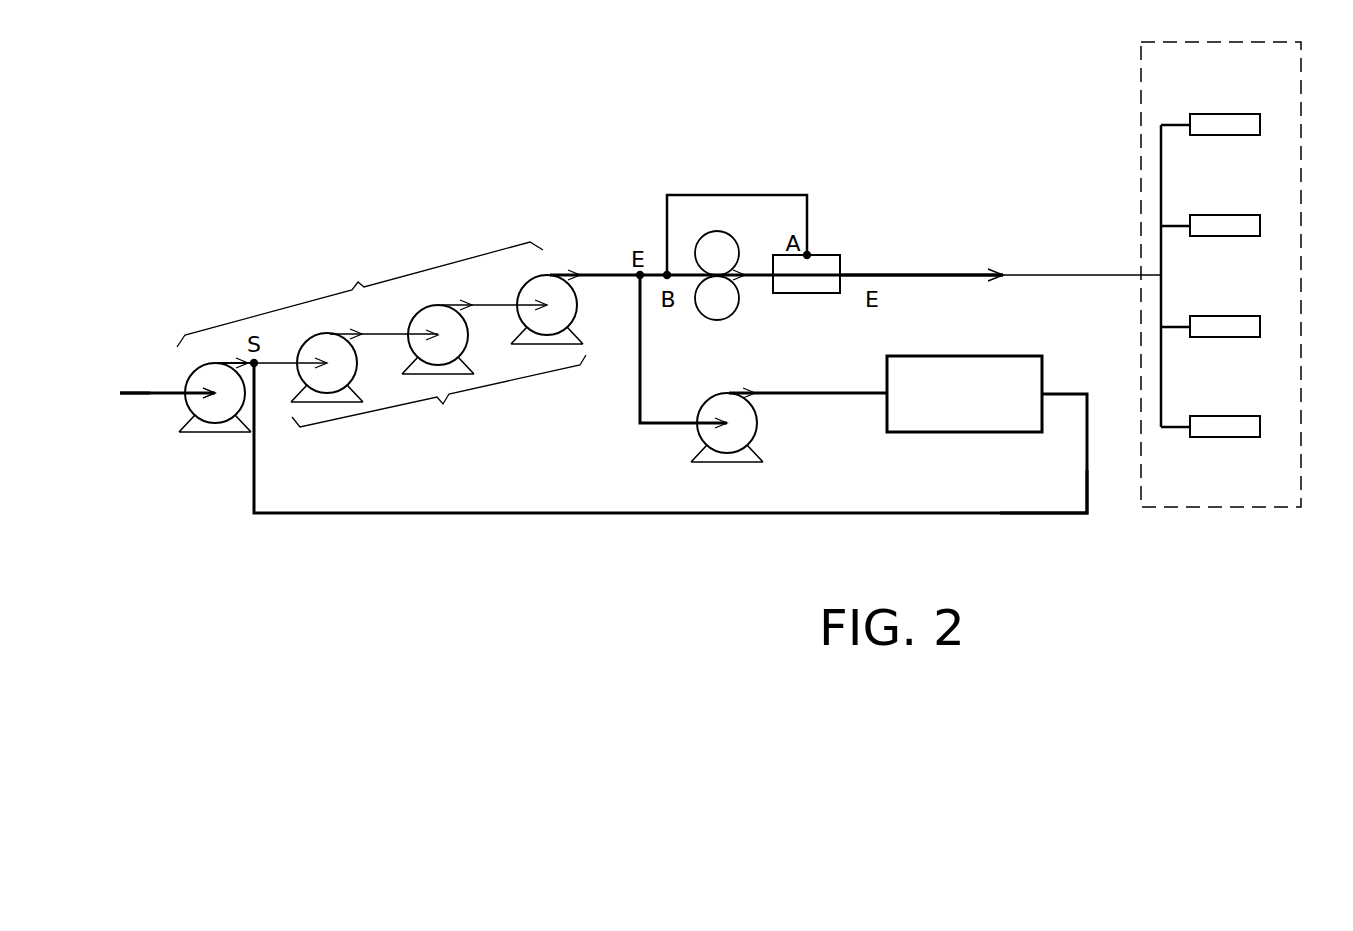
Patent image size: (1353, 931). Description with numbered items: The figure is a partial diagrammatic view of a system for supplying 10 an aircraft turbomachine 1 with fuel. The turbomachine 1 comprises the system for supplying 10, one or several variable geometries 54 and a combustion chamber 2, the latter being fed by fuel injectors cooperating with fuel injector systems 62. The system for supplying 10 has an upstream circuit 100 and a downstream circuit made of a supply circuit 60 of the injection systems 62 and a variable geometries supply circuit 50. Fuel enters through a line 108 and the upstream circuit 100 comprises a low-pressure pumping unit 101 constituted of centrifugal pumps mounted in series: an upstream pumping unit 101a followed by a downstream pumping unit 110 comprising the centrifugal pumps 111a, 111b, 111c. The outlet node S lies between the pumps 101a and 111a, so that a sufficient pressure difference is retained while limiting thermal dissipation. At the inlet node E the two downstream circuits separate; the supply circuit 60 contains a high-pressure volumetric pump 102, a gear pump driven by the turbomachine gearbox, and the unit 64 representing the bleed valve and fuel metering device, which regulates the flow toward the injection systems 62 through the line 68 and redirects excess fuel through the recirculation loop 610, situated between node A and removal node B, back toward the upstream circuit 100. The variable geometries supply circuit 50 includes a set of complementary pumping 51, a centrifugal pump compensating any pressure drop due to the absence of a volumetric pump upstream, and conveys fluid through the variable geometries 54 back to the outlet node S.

The aircraft turbomachine 1 is at (1042, 562).
The combustion chamber 2 is at (1301, 458).
The system for supplying 10 is at (929, 191).
The variable geometries supply circuit 50 is at (712, 518).
The set of complementary pumping 51 is at (738, 453).
The variable geometries 54 is at (999, 421).
The supply circuit of the injection systems 60 is at (960, 265).
The fuel injector systems 62 is at (1227, 127).
The bleed valve and fuel metering device 64 is at (823, 263).
The feed line 68 is at (1058, 273).
The upstream circuit 100 is at (135, 362).
The low-pressure pumping unit 101 is at (360, 294).
The upstream pumping unit 101a is at (215, 408).
The high-pressure volumetric pump 102 is at (718, 298).
The inlet line 108 is at (158, 395).
The downstream pumping unit 110 is at (439, 394).
The centrifugal pump 111a is at (313, 395).
The centrifugal pump 111b is at (452, 367).
The centrifugal pump 111c is at (562, 337).
The recirculation loop 610 is at (745, 195).